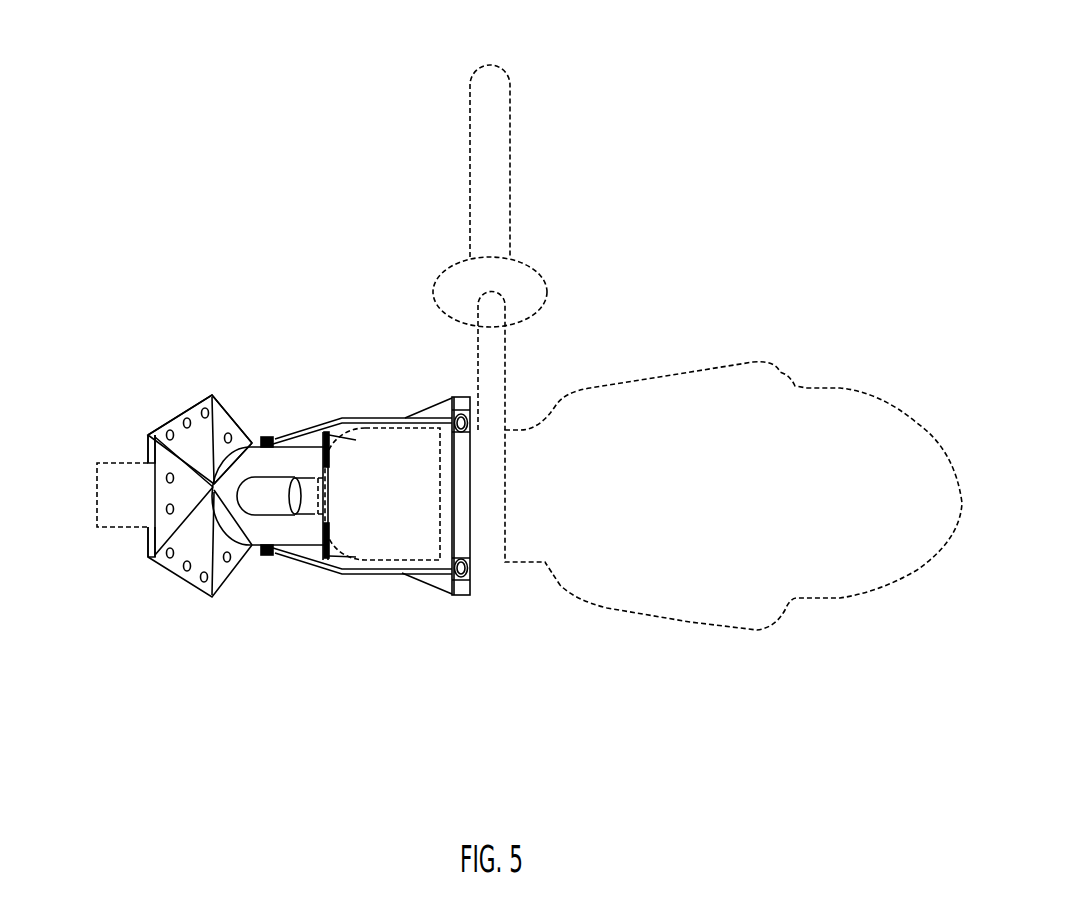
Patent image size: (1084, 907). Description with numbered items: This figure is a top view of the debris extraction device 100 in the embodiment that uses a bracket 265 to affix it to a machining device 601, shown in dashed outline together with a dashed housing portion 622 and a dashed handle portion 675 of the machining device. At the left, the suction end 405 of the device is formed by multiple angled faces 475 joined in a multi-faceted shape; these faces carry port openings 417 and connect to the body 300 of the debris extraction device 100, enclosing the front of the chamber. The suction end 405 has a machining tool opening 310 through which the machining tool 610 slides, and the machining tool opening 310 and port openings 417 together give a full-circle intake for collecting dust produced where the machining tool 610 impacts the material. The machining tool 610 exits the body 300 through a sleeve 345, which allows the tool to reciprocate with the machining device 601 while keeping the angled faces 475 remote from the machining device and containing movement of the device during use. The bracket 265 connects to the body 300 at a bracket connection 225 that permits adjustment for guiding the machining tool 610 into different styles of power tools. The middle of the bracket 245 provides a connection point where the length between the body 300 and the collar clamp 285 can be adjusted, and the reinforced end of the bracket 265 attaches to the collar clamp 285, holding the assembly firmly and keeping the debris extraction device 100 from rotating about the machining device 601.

The debris extraction device 100 is at (275, 300).
The body 300 is at (252, 462).
The sleeve 345 is at (280, 490).
The machining tool 610 is at (315, 487).
The angled faces 475 is at (202, 443).
The suction end 405 is at (148, 462).
The port openings 417 is at (187, 567).
The machining tool opening 310 is at (150, 533).
The bracket connection 225 is at (264, 555).
The middle of the bracket 245 is at (343, 570).
The bracket 265 is at (445, 583).
The collar clamp 285 is at (463, 510).
The receiver housing 622 is at (391, 472).
The handle 675 is at (493, 227).
The machining device 601 is at (667, 492).